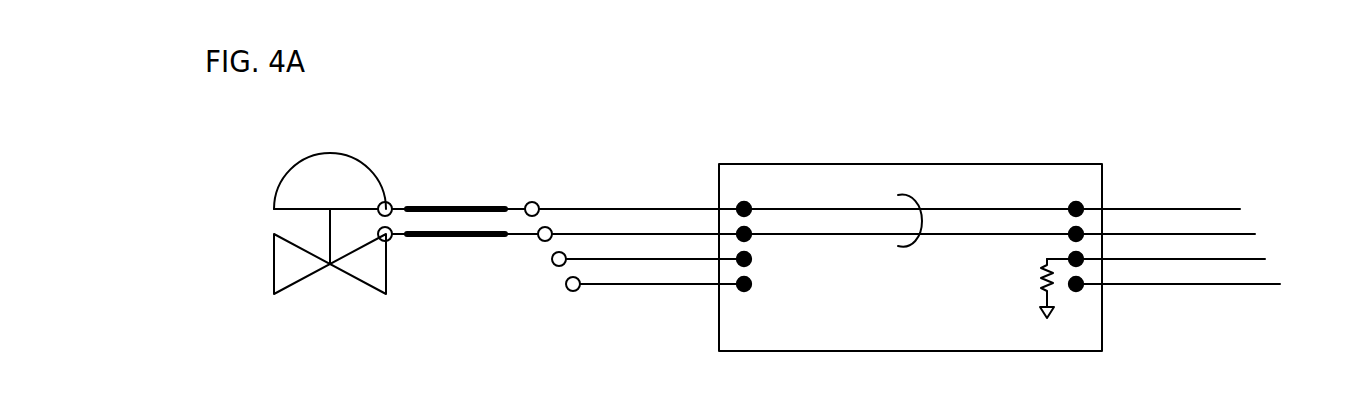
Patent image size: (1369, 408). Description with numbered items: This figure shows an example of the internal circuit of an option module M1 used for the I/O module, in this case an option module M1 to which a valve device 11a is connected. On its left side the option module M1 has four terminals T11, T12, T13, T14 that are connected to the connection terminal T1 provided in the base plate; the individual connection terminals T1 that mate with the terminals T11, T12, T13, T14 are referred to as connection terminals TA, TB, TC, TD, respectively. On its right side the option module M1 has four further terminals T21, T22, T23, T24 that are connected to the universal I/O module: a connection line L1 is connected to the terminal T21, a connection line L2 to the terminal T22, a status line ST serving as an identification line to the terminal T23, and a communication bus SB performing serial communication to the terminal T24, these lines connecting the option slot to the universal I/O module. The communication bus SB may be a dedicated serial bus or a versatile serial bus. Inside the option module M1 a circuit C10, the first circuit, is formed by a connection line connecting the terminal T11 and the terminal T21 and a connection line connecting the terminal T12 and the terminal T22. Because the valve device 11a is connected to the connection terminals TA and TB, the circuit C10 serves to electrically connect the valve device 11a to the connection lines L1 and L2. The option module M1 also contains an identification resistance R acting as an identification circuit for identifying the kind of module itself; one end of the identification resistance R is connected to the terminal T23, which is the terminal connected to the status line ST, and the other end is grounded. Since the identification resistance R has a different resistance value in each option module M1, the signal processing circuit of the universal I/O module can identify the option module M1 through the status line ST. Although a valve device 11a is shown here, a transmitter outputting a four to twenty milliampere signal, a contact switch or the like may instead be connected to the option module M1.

The valve device 11a is at (362, 160).
The connection terminal TA is at (537, 202).
The connection terminal TB is at (540, 240).
The connection terminal TC is at (554, 265).
The connection terminal TD is at (568, 290).
The connection terminal T1 is at (480, 308).
The terminal T11 is at (749, 202).
The terminal T12 is at (750, 238).
The terminal T13 is at (750, 263).
The terminal T14 is at (745, 291).
The option module M1 is at (1013, 152).
The circuit C10 is at (910, 247).
The terminal T21 is at (1080, 204).
The terminal T22 is at (1081, 230).
The terminal T23 is at (1065, 245).
The terminal T24 is at (1080, 290).
The identification resistance R is at (1041, 280).
The connection line L1 is at (1185, 208).
The connection line L2 is at (1213, 233).
The status line ST is at (1232, 258).
The communication bus SB is at (1258, 283).